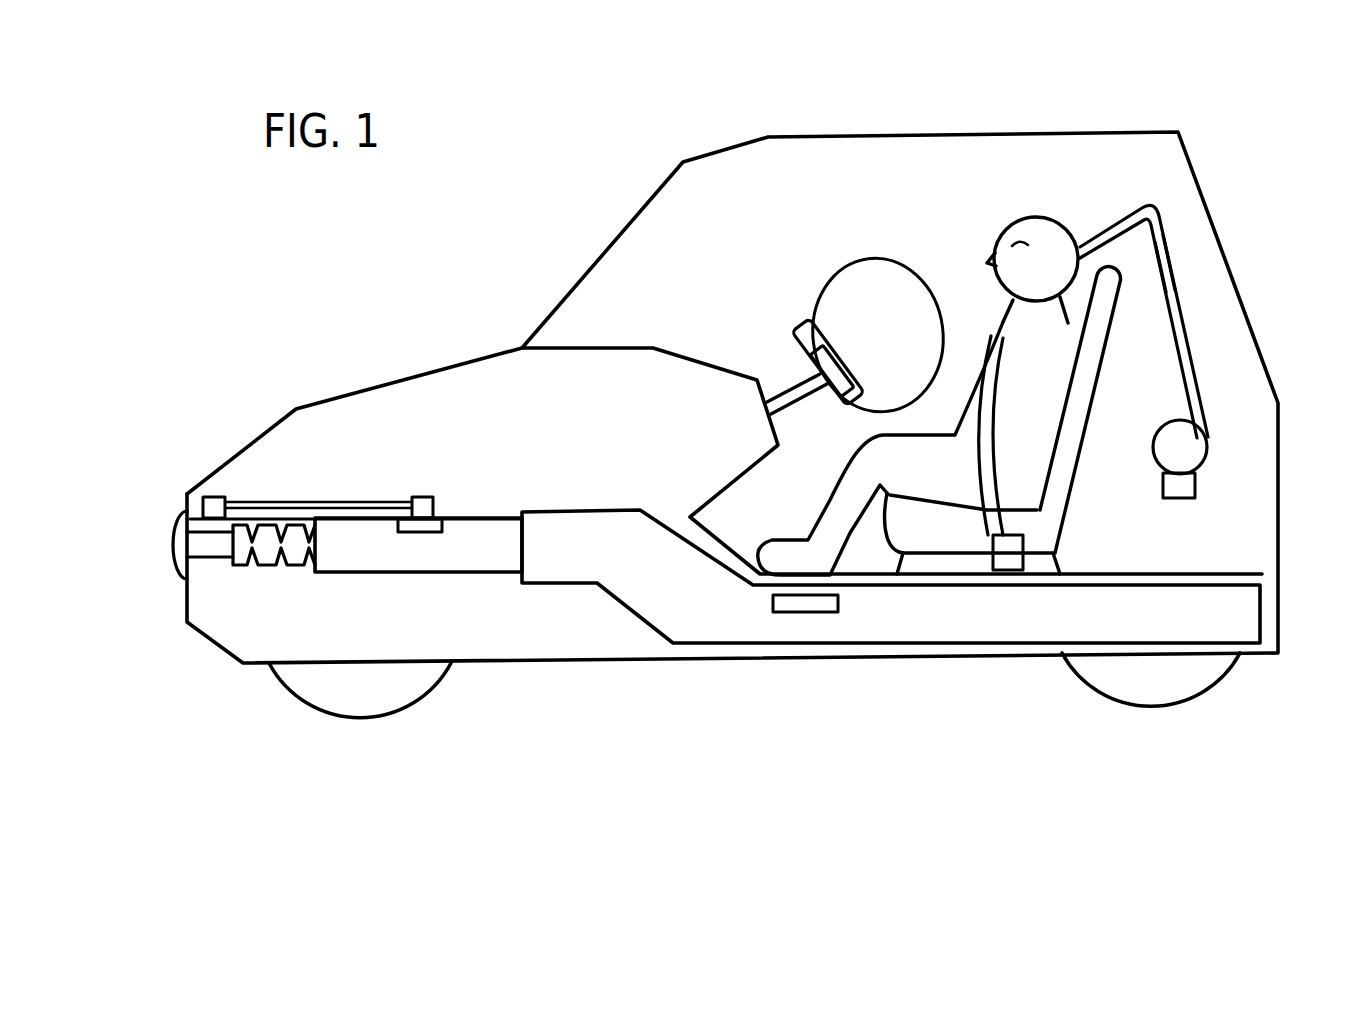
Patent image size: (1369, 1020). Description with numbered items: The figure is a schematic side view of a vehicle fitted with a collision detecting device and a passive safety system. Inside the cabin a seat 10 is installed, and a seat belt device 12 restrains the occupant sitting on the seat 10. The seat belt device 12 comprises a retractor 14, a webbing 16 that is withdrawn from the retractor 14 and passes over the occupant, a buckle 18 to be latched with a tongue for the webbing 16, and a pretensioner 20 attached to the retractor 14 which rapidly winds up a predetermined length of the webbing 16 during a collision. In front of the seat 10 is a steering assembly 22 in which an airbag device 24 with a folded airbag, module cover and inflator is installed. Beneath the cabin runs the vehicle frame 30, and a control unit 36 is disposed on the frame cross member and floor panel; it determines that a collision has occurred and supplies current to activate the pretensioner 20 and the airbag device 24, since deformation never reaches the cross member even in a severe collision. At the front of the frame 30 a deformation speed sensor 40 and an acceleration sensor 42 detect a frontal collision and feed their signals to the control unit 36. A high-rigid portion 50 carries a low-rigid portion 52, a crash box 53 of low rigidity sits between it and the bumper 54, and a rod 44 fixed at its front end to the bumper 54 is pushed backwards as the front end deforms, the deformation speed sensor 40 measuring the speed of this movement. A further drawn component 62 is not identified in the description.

The seat 10 is at (1053, 525).
The seat belt device 12 is at (1200, 345).
The retractor 14 is at (1188, 443).
The webbing 16 is at (1180, 276).
The buckle 18 is at (1007, 560).
The pretensioner 20 is at (1182, 483).
The steering assembly 22 is at (795, 340).
The airbag device 24 is at (817, 312).
The vehicle frame 30 is at (722, 628).
The control unit 36 is at (818, 603).
The deformation speed sensor 40 is at (343, 495).
The acceleration sensor 42 is at (447, 542).
The rod 44 is at (373, 500).
The high-rigid portion 50 is at (393, 563).
The low-rigid portion 52 is at (253, 567).
The crash box 53 is at (208, 549).
The bumper 54 is at (173, 542).
The slider block 62 is at (427, 496).